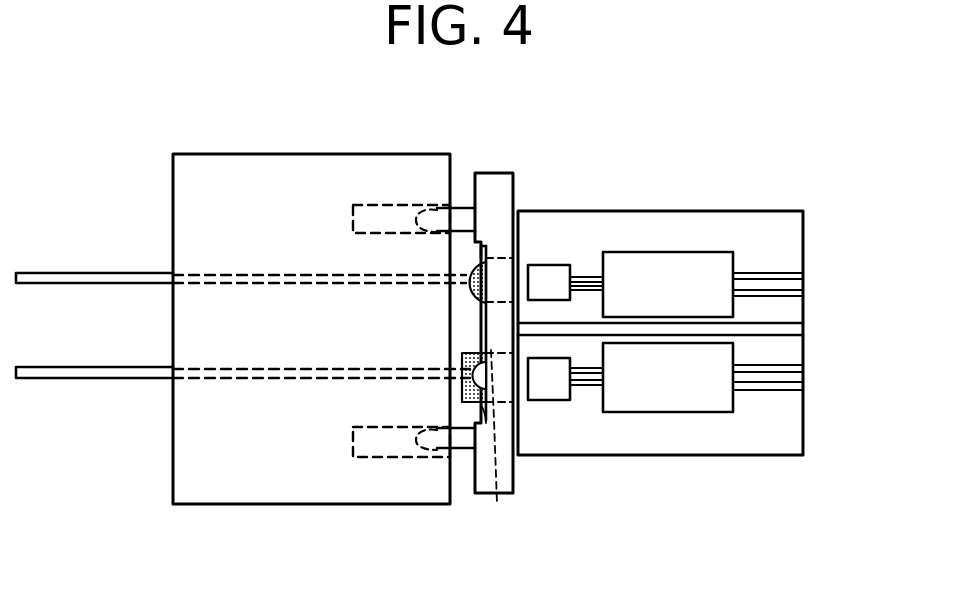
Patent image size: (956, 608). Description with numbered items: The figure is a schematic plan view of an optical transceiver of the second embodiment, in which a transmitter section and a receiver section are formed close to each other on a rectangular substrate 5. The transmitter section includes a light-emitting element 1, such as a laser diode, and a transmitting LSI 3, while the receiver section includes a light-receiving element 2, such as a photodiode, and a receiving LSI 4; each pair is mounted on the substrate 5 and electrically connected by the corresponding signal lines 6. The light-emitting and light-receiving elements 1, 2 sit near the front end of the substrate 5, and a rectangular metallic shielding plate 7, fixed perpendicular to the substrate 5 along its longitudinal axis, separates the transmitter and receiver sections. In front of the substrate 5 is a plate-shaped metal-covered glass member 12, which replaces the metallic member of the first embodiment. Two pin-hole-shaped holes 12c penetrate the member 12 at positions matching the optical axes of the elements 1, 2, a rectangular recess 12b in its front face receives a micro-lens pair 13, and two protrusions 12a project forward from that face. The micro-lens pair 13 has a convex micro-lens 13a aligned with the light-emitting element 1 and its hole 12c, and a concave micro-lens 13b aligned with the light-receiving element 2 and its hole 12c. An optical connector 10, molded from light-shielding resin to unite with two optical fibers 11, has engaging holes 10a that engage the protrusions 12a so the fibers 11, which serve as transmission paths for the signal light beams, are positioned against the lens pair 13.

The light-emitting element 1 is at (550, 280).
The light-receiving element 2 is at (550, 387).
The transmitting LSI 3 is at (655, 262).
The receiving LSI 4 is at (670, 405).
The substrate 5 is at (698, 222).
The signal lines 6 is at (771, 272).
The shielding plate 7 is at (795, 333).
The optical connector 10 is at (255, 166).
The engaging holes 10a is at (371, 205).
The optical fibers 11 is at (92, 274).
The metal-covered glass member 12 is at (485, 173).
The protrusions 12a is at (397, 208).
The recess 12b is at (480, 405).
The pin-hole-shaped holes 12c is at (497, 503).
The micro-lens pair 13 is at (483, 325).
The convex micro-lens 13a is at (480, 274).
The concave micro-lens 13b is at (480, 366).